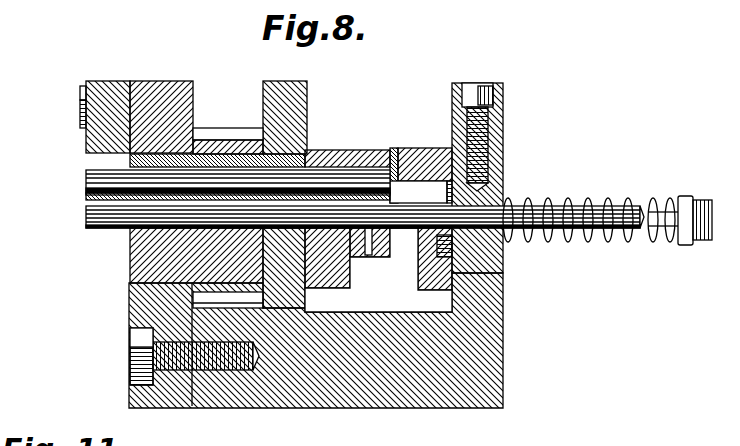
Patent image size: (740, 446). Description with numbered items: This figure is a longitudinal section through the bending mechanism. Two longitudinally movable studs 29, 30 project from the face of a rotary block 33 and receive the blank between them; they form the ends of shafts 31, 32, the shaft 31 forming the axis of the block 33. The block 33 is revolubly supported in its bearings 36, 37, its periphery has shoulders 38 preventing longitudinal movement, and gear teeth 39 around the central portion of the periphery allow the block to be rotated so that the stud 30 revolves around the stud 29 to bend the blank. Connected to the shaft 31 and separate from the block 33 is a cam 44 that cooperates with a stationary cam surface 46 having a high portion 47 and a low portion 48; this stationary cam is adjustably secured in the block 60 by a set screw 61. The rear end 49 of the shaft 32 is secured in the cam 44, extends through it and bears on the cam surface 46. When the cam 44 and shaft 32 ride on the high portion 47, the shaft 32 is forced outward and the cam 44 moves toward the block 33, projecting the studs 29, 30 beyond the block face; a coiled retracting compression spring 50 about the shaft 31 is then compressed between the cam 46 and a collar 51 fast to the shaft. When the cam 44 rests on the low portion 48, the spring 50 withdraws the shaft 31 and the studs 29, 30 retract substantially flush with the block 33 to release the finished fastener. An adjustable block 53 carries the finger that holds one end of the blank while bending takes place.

The stud 29 is at (90, 210).
The stud 30 is at (86, 181).
The shaft 31 is at (147, 208).
The shaft 32 is at (210, 178).
The block 33 is at (128, 270).
The bearing 36 is at (128, 318).
The bearing 37 is at (283, 306).
The shoulders 38 is at (256, 292).
The gear teeth 39 is at (212, 128).
The cam 44 is at (335, 160).
The stationary cam surface 46 is at (420, 150).
The high portion 47 is at (392, 150).
The low portion 48 is at (503, 188).
The rear end 49 is at (390, 185).
The retracting compression spring 50 is at (573, 237).
The collar 51 is at (685, 198).
The adjustable block 53 is at (107, 88).
The block 60 is at (462, 368).
The set screw 61 is at (483, 95).